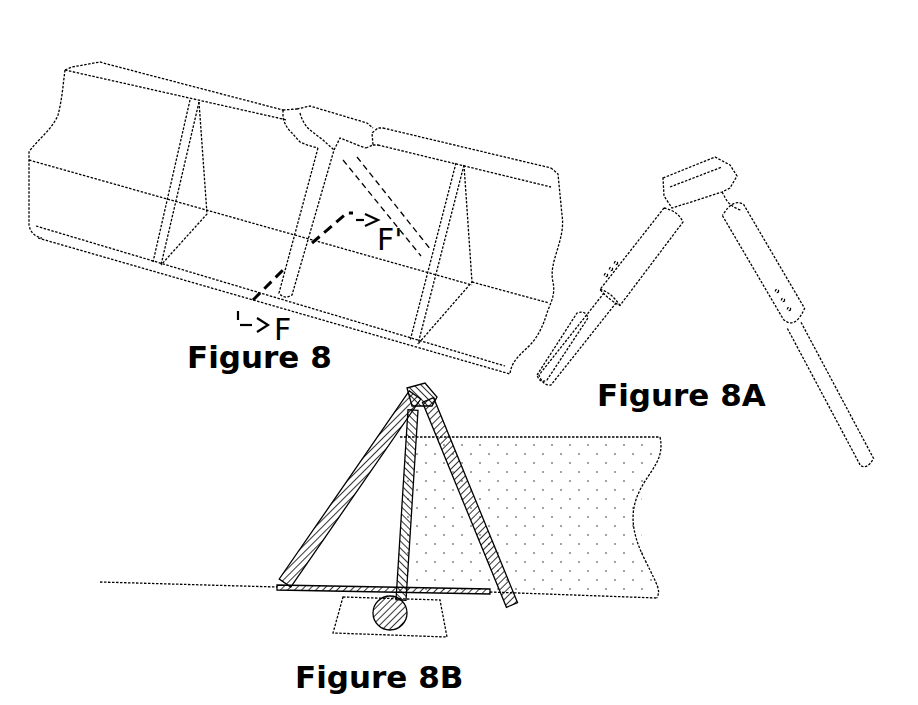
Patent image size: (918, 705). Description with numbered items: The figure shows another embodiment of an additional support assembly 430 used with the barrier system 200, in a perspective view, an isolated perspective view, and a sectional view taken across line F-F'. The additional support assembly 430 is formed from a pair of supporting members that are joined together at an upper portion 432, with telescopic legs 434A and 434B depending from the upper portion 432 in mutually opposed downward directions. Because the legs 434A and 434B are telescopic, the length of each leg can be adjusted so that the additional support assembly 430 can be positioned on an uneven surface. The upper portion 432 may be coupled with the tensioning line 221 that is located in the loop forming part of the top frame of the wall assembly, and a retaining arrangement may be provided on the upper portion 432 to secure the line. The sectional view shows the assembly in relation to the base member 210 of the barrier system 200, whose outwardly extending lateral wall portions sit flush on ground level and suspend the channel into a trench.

In FIG. 8, the barrier system 200 is at (478, 143).
In FIG. 8, the tensioning line 221 is at (295, 116).
In FIG. 8, the additional support assembly 430 is at (312, 182).
In FIG. 8A, the additional support assembly 430 is at (706, 288).
In FIG. 8B, the additional support assembly 430 is at (383, 434).
In FIG. 8A, the upper portion 432 is at (693, 168).
In FIG. 8A, the telescopic leg 434A is at (617, 275).
In FIG. 8A, the telescopic leg 434B is at (757, 272).
In FIG. 8B, the base member 210 is at (384, 597).